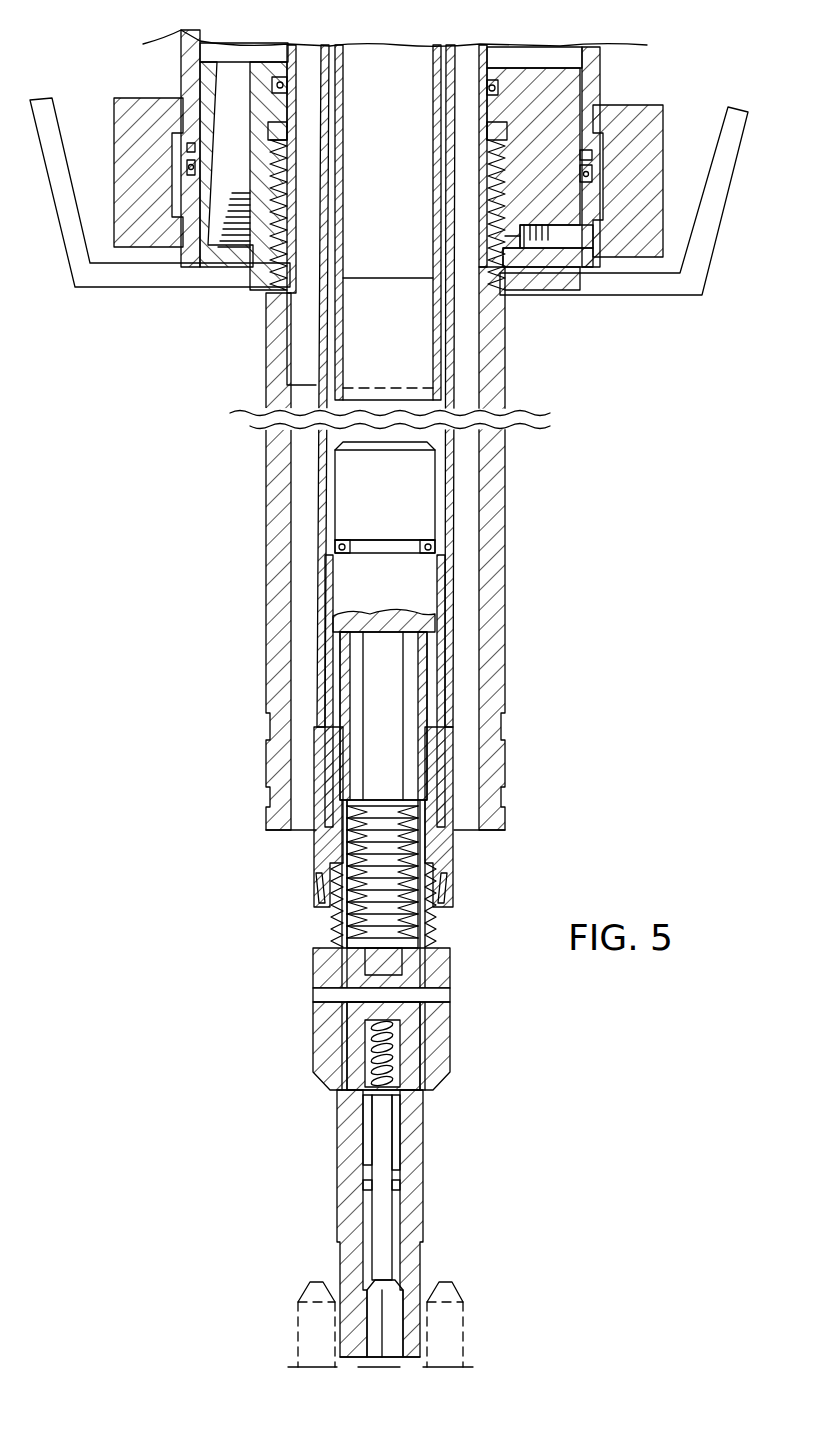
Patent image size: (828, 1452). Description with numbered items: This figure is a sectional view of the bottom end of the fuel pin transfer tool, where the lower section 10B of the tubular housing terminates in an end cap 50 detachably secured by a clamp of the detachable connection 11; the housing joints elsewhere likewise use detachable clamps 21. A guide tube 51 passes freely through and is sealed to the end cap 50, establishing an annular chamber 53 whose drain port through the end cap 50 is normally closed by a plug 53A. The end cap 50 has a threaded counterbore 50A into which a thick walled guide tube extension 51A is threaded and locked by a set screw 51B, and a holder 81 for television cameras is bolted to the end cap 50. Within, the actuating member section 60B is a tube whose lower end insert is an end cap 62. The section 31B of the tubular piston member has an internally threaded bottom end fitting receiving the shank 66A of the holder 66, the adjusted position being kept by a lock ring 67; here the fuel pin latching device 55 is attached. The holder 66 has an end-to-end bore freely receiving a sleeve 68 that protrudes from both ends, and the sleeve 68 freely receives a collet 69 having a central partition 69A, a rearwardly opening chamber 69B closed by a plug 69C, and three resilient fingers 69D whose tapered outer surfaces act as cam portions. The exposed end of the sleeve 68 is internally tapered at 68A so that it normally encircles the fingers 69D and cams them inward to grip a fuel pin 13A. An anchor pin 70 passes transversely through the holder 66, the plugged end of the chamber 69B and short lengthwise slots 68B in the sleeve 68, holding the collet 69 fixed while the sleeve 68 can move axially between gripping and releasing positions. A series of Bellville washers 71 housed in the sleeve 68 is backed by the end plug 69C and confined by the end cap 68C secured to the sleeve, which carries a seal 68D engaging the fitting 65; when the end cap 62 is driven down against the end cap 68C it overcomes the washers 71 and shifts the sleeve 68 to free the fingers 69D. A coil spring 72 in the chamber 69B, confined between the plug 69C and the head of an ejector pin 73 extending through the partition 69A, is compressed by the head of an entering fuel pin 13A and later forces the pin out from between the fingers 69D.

The lower section 10B is at (183, 62).
The detachable clamp 21 is at (114, 163).
The annular chamber 53 is at (540, 57).
The detachable connection 11 is at (676, 129).
The actuating member section 60B is at (345, 221).
The holder 81 is at (710, 265).
The plug 53A is at (223, 243).
The threaded counterbore 50A is at (278, 268).
The set screw 51B is at (552, 237).
The end cap 50 is at (578, 268).
The guide tube 51 is at (295, 372).
The end cap 62 is at (352, 367).
The section of the tubular piston member 31B is at (447, 526).
The guide tube extension 51A is at (505, 558).
The seal 68D is at (333, 558).
The end cap 68C is at (423, 593).
The fitting 65 is at (452, 848).
The lock ring 67 is at (450, 888).
The Bellville washers 71 is at (370, 932).
The shank 66A is at (430, 935).
The plug 69C is at (377, 957).
The holder 66 is at (452, 972).
The anchor pin 70 is at (323, 996).
The fuel pin latching device 55 is at (280, 1025).
The lengthwise slots 68B is at (430, 1030).
The coil spring 72 is at (372, 1040).
The sleeve 68 is at (338, 1112).
The ejector pin 73 is at (385, 1118).
The rearwardly opening chamber 69B is at (365, 1135).
The collet 69 is at (352, 1200).
The central partition 69A is at (395, 1183).
The fuel pin 13A is at (298, 1312).
The resilient fingers 69D is at (407, 1307).
The internal taper 68A is at (368, 1325).